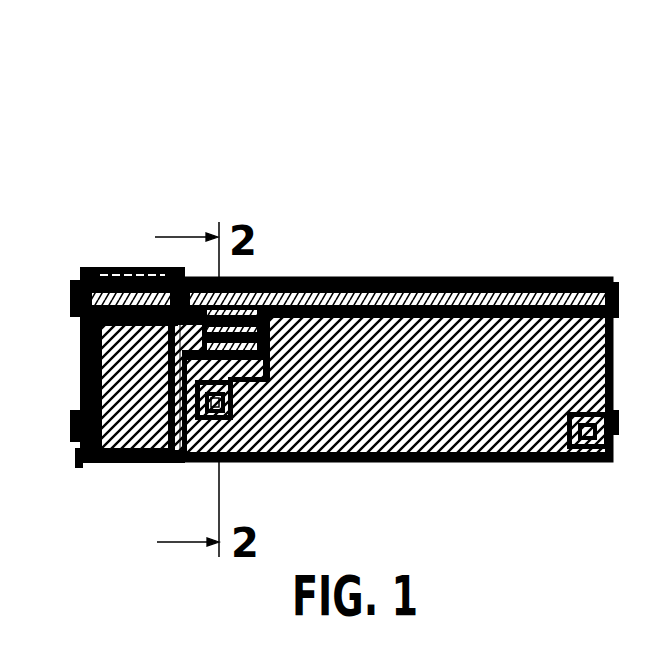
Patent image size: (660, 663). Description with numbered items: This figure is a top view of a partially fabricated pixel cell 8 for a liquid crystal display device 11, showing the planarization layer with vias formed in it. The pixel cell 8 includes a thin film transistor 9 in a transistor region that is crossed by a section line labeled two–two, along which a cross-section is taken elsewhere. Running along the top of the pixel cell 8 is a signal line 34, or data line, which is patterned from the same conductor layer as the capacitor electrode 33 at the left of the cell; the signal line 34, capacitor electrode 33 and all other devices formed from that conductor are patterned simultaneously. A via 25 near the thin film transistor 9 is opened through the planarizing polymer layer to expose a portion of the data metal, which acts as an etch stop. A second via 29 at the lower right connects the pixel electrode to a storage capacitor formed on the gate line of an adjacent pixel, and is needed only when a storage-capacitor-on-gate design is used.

The liquid crystal display device 11 is at (212, 136).
The pixel cell 8 is at (344, 238).
The signal line 34 is at (436, 266).
The thin film transistor 9 is at (282, 367).
The via 25 is at (220, 422).
The second via 29 is at (593, 460).
The capacitor electrode 33 is at (112, 427).